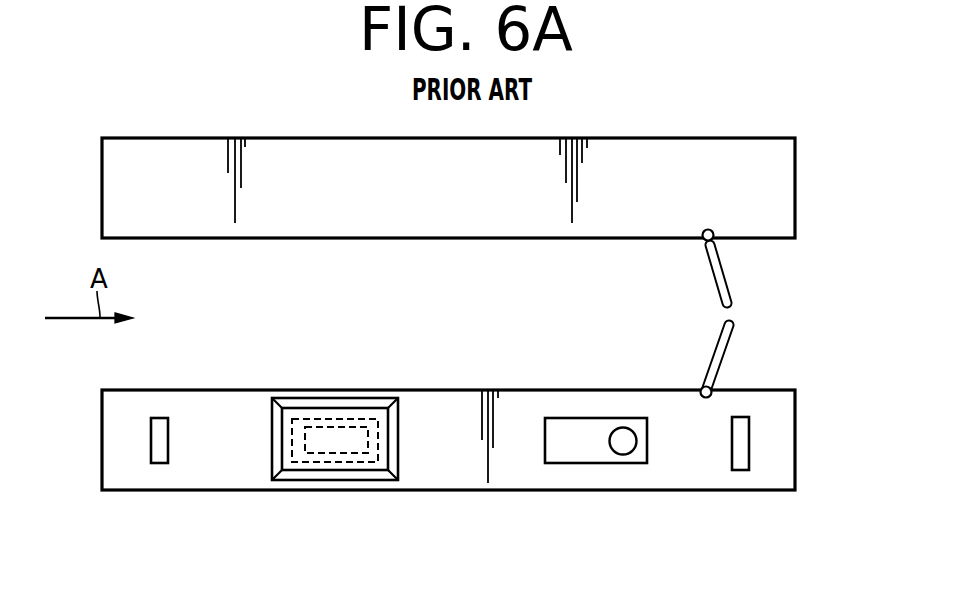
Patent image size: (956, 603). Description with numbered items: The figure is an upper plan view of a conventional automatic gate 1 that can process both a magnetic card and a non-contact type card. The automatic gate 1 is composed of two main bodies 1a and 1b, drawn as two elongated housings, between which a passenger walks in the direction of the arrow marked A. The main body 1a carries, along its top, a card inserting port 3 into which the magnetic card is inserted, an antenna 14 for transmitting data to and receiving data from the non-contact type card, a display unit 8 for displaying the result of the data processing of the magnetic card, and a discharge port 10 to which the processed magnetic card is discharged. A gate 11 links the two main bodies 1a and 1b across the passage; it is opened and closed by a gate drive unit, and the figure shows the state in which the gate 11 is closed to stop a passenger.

The automatic gate 1 is at (797, 160).
The main body 1a is at (102, 440).
The main body 1b is at (102, 198).
The card inserting port 3 is at (162, 463).
The display unit 8 is at (580, 455).
The discharge port 10 is at (743, 465).
The gate 11 is at (730, 303).
The antenna 14 is at (357, 477).